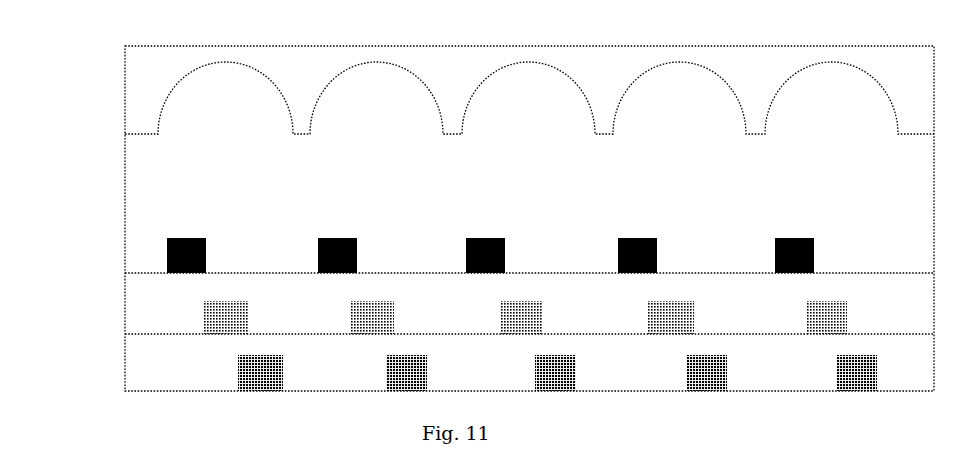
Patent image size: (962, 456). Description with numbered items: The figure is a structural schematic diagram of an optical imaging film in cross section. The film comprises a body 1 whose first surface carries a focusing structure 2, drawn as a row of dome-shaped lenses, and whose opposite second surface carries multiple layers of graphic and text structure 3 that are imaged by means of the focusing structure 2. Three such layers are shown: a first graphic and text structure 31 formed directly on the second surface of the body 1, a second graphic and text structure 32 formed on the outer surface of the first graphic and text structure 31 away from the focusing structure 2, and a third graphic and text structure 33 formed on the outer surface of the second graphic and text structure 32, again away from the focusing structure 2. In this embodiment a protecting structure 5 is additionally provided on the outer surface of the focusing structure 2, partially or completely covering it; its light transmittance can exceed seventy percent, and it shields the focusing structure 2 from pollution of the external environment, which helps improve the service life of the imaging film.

The body 1 is at (192, 205).
The focusing structure 2 is at (195, 118).
The multiple layers of graphic and text structure 3 is at (475, 309).
The first graphic and text structure 31 is at (167, 258).
The second graphic and text structure 32 is at (200, 322).
The third graphic and text structure 33 is at (238, 383).
The protecting structure 5 is at (173, 60).